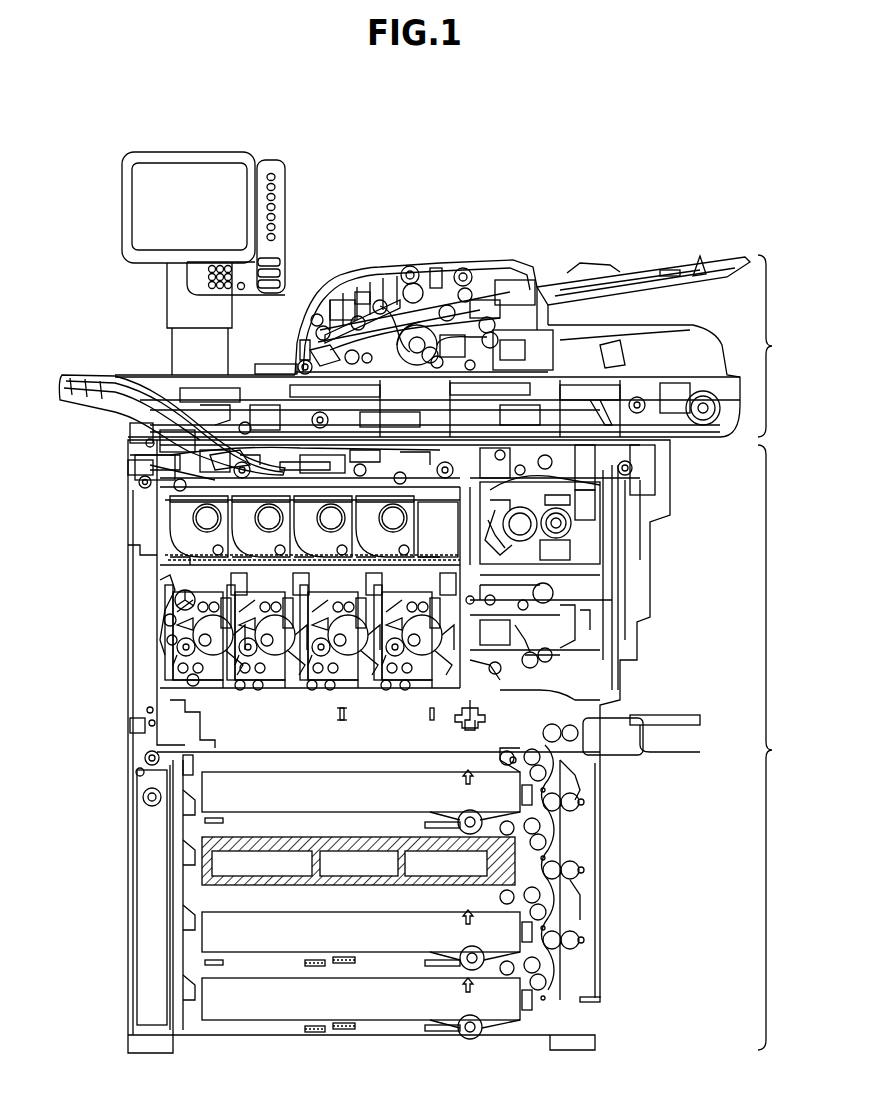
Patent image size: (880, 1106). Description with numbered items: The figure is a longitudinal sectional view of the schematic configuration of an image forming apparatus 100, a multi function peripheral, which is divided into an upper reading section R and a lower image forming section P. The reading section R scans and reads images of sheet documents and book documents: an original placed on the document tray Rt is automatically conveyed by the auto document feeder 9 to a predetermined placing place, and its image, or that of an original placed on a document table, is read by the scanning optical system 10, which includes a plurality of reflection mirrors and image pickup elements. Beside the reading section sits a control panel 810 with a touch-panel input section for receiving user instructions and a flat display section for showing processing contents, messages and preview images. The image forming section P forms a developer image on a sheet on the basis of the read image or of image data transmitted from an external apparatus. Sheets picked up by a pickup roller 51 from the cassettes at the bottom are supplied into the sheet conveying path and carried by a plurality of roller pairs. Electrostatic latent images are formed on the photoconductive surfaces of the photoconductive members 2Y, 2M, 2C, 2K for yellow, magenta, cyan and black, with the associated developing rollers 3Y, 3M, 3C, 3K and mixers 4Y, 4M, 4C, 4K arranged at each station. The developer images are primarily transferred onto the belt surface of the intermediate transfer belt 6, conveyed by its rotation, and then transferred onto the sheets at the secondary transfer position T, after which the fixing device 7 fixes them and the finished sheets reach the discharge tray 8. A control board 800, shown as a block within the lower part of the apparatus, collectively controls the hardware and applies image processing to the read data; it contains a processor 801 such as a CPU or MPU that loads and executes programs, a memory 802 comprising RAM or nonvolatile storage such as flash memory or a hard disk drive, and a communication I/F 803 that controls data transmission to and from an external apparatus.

The image forming apparatus 100 is at (593, 178).
The control panel 810 is at (150, 152).
The auto document feeder 9 is at (318, 280).
The document tray Rt is at (643, 272).
The scanning optical system 10 is at (292, 362).
The discharge tray 8 is at (140, 385).
The reading section R is at (775, 346).
The image forming section P is at (775, 747).
The intermediate transfer belt 6 is at (447, 572).
The photoconductive member 2Y is at (190, 612).
The photoconductive member 2M is at (256, 612).
The photoconductive member 2C is at (331, 612).
The photoconductive member 2K is at (406, 612).
The developing roller 3Y is at (158, 650).
The developing roller 3M is at (240, 690).
The developing roller 3C is at (312, 690).
The developing roller 3K is at (386, 690).
The mixer 4Y is at (193, 688).
The mixer 4M is at (258, 690).
The mixer 4C is at (330, 690).
The mixer 4K is at (405, 690).
The fixing device 7 is at (600, 525).
The secondary transfer position T is at (563, 597).
The pickup roller 51 is at (488, 770).
The control board 800 is at (315, 838).
The processor 801 is at (275, 885).
The memory 802 is at (364, 885).
The communication I/F 803 is at (418, 885).